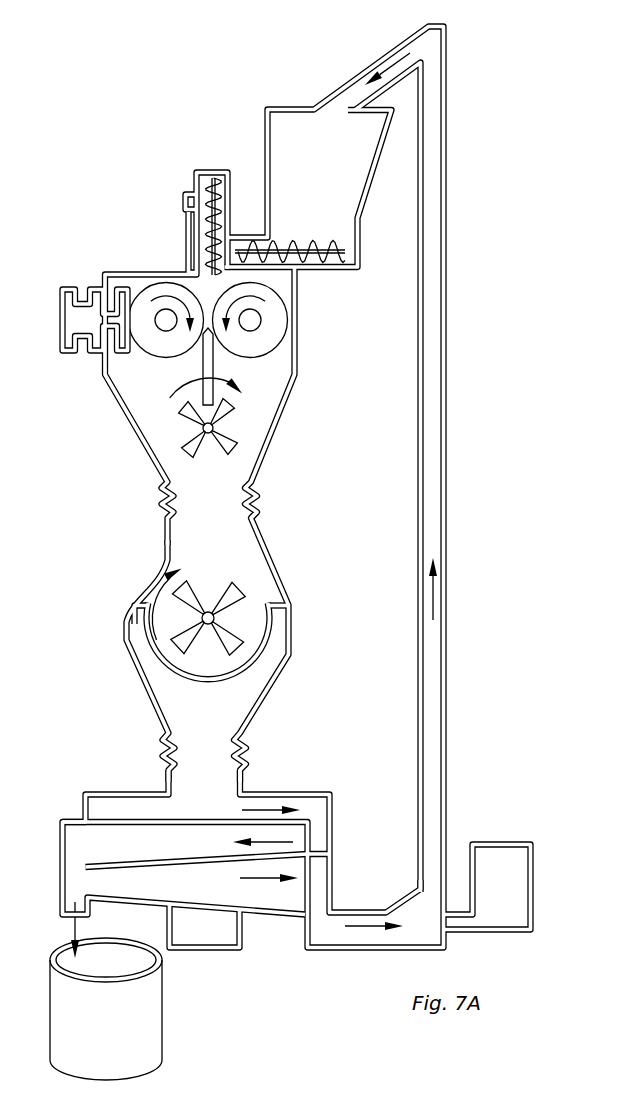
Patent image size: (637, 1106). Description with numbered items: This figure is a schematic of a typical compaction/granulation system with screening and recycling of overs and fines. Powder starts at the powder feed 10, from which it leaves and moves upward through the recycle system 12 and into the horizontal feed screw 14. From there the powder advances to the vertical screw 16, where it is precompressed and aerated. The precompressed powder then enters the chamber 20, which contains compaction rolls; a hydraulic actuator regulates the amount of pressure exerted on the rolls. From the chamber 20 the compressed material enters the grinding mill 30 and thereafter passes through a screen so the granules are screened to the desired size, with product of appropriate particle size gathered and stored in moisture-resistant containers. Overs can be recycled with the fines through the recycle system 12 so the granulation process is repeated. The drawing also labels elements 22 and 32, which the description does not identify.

The powder feed 10 is at (493, 865).
The recycle system 12 is at (428, 462).
The horizontal feed screw 14 is at (314, 258).
The vertical screw 16 is at (203, 182).
The chamber 20 is at (142, 376).
The rollers 22 is at (272, 342).
The grinding mill 30 is at (241, 586).
The fan housing 32 is at (245, 672).